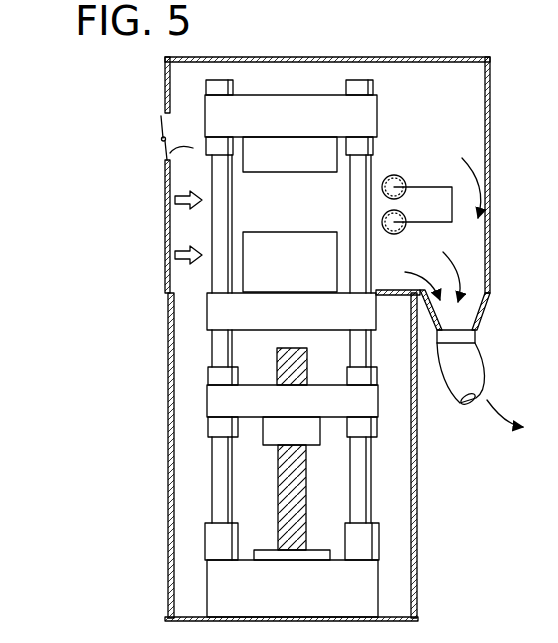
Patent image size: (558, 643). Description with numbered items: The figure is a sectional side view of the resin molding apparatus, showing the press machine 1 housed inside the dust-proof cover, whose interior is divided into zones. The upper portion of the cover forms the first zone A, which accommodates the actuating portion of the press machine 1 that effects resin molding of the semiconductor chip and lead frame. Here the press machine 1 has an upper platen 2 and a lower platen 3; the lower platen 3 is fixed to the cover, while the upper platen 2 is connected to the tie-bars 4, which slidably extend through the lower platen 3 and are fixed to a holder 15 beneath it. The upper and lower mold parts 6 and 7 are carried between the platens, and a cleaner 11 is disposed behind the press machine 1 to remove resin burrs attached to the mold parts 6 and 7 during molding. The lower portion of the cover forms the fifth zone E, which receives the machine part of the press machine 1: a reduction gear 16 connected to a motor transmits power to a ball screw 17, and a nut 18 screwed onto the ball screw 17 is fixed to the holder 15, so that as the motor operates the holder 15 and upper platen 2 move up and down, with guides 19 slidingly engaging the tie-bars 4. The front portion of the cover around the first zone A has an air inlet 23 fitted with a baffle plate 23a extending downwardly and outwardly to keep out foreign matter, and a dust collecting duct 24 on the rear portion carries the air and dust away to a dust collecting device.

The press machine 1 is at (383, 78).
The upper platen 2 is at (212, 102).
The lower platen 3 is at (215, 313).
The tie-bars 4 is at (218, 355).
The upper mold part 6 is at (250, 170).
The lower mold part 7 is at (250, 280).
The cleaner 11 is at (432, 187).
The holder 15 is at (220, 405).
The reduction gear 16 is at (220, 590).
The ball screw 17 is at (285, 495).
The nut 18 is at (275, 440).
The guides 19 is at (213, 537).
The air inlet 23 is at (152, 145).
The baffle plate 23a is at (162, 140).
The dust collecting duct 24 is at (470, 360).
The first zone A is at (462, 103).
The fifth zone E is at (392, 468).